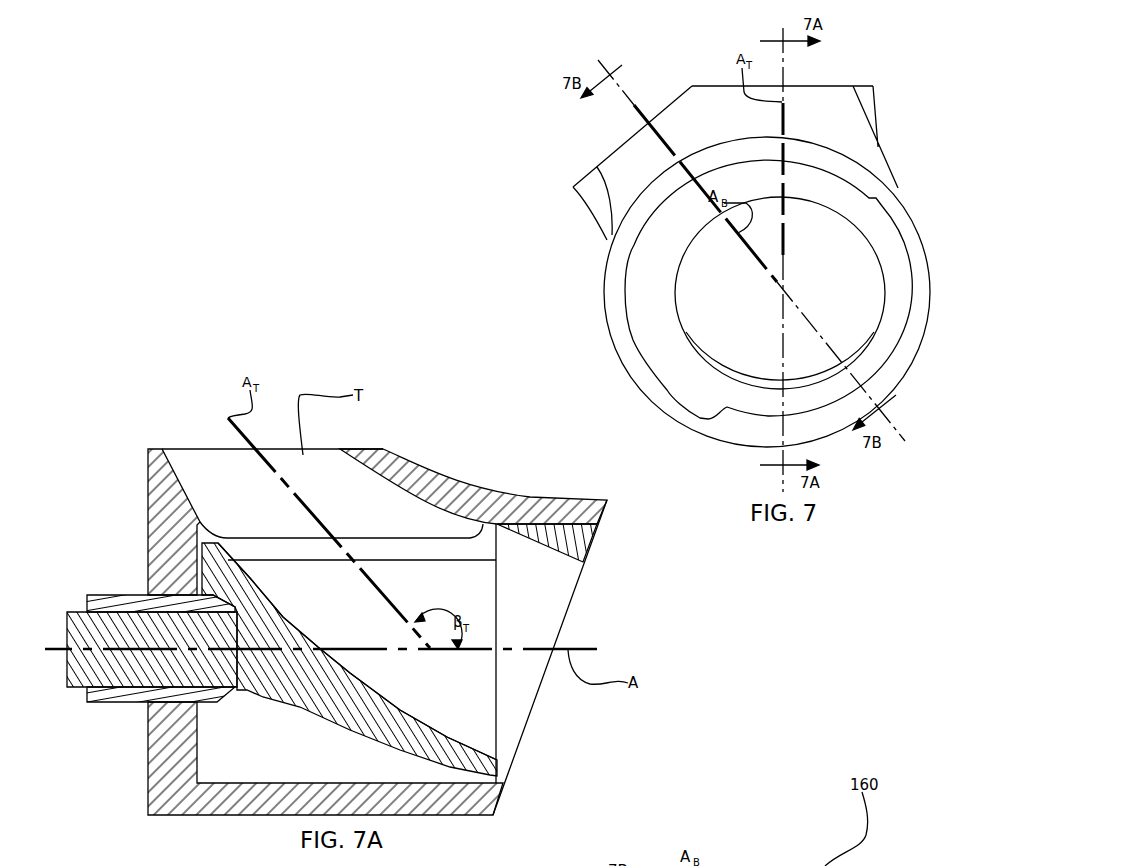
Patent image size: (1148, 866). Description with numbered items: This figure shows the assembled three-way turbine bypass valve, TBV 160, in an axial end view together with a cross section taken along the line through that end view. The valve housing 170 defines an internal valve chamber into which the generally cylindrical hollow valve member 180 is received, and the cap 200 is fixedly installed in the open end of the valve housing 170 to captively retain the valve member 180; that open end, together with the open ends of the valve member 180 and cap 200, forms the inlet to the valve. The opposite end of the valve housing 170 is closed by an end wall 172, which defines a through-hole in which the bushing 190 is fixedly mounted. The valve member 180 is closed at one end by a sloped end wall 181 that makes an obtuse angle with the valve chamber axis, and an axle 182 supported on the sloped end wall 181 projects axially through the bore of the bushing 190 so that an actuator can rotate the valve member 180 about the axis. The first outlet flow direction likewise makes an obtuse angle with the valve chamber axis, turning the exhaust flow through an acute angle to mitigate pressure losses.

In FIG. 7, the TBV 160 is at (555, 146).
In FIG. 7A, the TBV 160 is at (431, 450).
In FIG. 7, the valve housing 170 is at (873, 145).
In FIG. 7A, the valve housing 170 is at (148, 490).
In FIG. 7A, the end wall 172 is at (148, 733).
In FIG. 7A, the valve member 180 is at (269, 659).
In FIG. 7A, the sloped end wall 181 is at (367, 683).
In FIG. 7A, the axle 182 is at (112, 673).
In FIG. 7A, the bushing 190 is at (120, 602).
In FIG. 7, the cap 200 is at (672, 365).
In FIG. 7A, the cap 200 is at (351, 622).